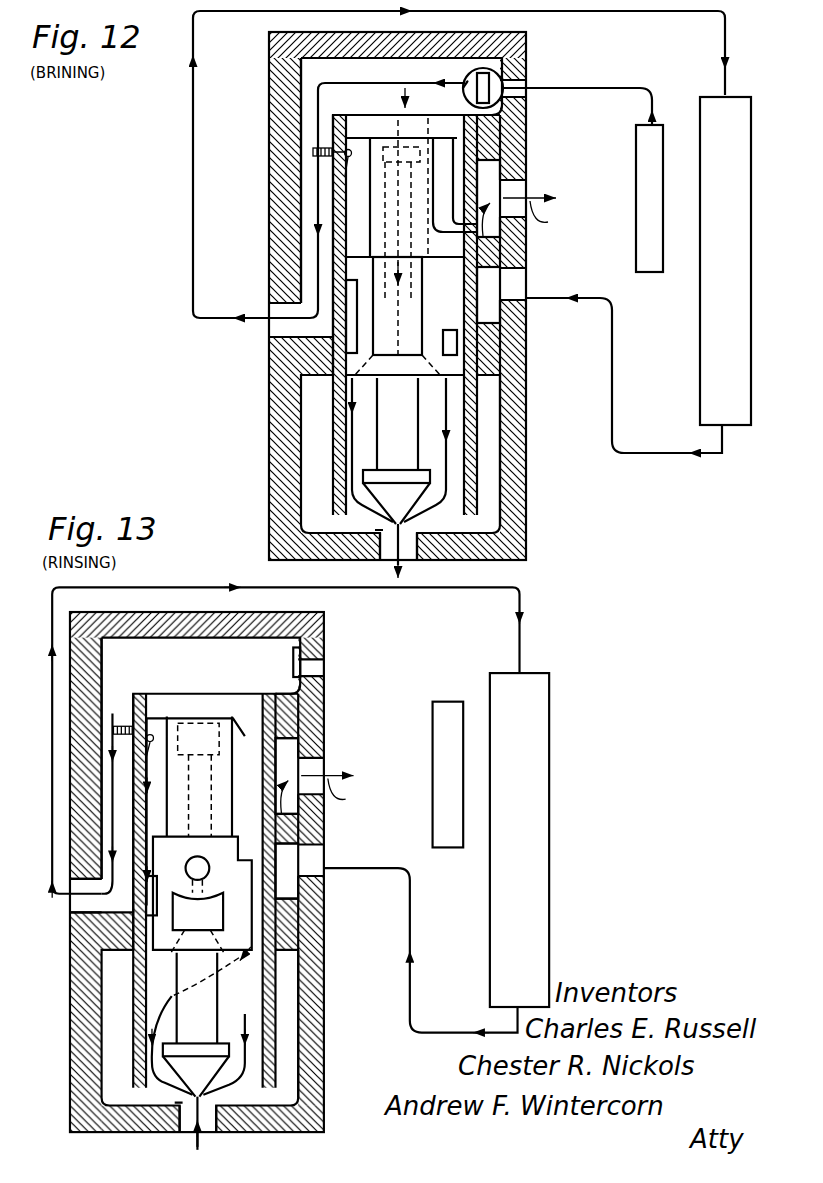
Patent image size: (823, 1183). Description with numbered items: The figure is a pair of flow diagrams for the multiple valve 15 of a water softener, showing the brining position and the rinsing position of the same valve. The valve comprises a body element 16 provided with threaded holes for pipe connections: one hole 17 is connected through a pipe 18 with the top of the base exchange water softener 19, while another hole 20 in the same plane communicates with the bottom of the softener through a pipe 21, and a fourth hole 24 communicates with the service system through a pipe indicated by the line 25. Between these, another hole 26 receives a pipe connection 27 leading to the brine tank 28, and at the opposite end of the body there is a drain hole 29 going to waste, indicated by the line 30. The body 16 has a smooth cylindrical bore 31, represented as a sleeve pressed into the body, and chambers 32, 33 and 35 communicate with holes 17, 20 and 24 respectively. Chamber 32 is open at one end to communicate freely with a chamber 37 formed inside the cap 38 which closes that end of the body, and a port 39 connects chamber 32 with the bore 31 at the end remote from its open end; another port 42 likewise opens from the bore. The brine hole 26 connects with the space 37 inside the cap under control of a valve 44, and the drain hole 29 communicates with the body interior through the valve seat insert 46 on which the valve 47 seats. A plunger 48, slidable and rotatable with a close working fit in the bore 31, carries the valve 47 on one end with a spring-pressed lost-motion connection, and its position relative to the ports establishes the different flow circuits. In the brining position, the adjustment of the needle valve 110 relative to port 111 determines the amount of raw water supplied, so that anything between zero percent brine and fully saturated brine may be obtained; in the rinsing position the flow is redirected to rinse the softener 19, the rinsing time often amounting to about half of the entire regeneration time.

In FIG. 12, the multiple valve 15 is at (262, 413).
In FIG. 13, the multiple valve 15 is at (227, 872).
In FIG. 12, the body element 16 is at (527, 362).
In FIG. 13, the body element 16 is at (321, 872).
In FIG. 12, the threaded hole 17 is at (272, 335).
In FIG. 13, the threaded hole 17 is at (60, 906).
In FIG. 12, the pipe 18 is at (435, 164).
In FIG. 13, the pipe 18 is at (268, 742).
In FIG. 12, the base exchange water softener 19 is at (751, 267).
In FIG. 13, the base exchange water softener 19 is at (542, 840).
In FIG. 12, the hole 20 is at (527, 280).
In FIG. 13, the hole 20 is at (332, 860).
In FIG. 12, the pipe 21 is at (612, 393).
In FIG. 13, the pipe 21 is at (421, 950).
In FIG. 12, the fourth hole 24 is at (528, 184).
In FIG. 13, the fourth hole 24 is at (337, 769).
In FIG. 12, the service pipe line 25 is at (540, 218).
In FIG. 13, the service pipe line 25 is at (341, 795).
In FIG. 12, the brine hole 26 is at (540, 95).
In FIG. 13, the brine hole 26 is at (334, 664).
In FIG. 12, the brine pipe connection 27 is at (612, 88).
In FIG. 12, the brine tank 28 is at (636, 209).
In FIG. 13, the brine tank 28 is at (430, 775).
In FIG. 12, the drain hole 29 is at (410, 562).
In FIG. 13, the drain hole 29 is at (222, 1125).
In FIG. 13, the drain line 30 is at (170, 1143).
In FIG. 12, the cylindrical bore 31 is at (470, 458).
In FIG. 13, the cylindrical bore 31 is at (248, 891).
In FIG. 12, the chamber 32 is at (300, 222).
In FIG. 13, the chamber 32 is at (73, 775).
In FIG. 12, the chamber 33 is at (488, 295).
In FIG. 13, the chamber 33 is at (287, 871).
In FIG. 12, the chamber 35 is at (489, 198).
In FIG. 13, the chamber 35 is at (286, 776).
In FIG. 12, the chamber 37 is at (383, 190).
In FIG. 13, the chamber 37 is at (155, 776).
In FIG. 12, the cap 38 is at (530, 41).
In FIG. 13, the cap 38 is at (218, 622).
In FIG. 12, the port 39 is at (340, 342).
In FIG. 13, the port 39 is at (128, 903).
In FIG. 12, the port 42 is at (411, 246).
In FIG. 13, the port 42 is at (199, 825).
In FIG. 12, the valve 44 is at (483, 73).
In FIG. 13, the valve 44 is at (295, 633).
In FIG. 12, the valve seat insert 46 is at (376, 532).
In FIG. 13, the valve seat insert 46 is at (176, 1110).
In FIG. 12, the valve 47 is at (381, 485).
In FIG. 13, the valve 47 is at (196, 1025).
In FIG. 12, the plunger 48 is at (373, 450).
In FIG. 13, the plunger 48 is at (200, 1021).
In FIG. 12, the needle valve 110 is at (310, 152).
In FIG. 13, the needle valve 110 is at (114, 715).
In FIG. 12, the port 111 is at (352, 177).
In FIG. 13, the port 111 is at (154, 727).